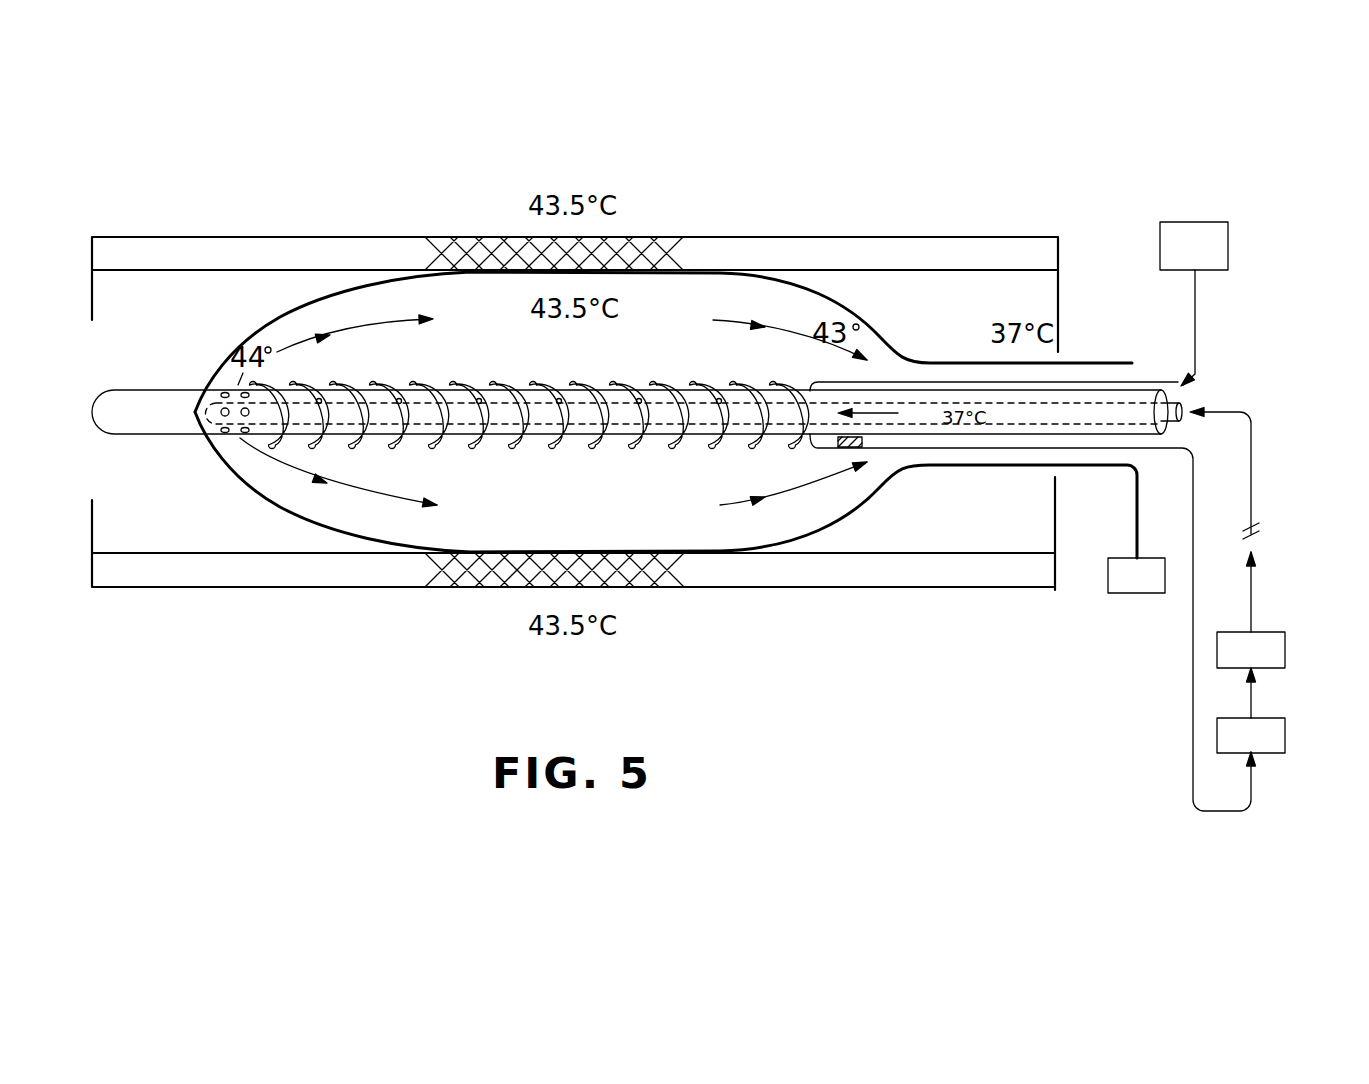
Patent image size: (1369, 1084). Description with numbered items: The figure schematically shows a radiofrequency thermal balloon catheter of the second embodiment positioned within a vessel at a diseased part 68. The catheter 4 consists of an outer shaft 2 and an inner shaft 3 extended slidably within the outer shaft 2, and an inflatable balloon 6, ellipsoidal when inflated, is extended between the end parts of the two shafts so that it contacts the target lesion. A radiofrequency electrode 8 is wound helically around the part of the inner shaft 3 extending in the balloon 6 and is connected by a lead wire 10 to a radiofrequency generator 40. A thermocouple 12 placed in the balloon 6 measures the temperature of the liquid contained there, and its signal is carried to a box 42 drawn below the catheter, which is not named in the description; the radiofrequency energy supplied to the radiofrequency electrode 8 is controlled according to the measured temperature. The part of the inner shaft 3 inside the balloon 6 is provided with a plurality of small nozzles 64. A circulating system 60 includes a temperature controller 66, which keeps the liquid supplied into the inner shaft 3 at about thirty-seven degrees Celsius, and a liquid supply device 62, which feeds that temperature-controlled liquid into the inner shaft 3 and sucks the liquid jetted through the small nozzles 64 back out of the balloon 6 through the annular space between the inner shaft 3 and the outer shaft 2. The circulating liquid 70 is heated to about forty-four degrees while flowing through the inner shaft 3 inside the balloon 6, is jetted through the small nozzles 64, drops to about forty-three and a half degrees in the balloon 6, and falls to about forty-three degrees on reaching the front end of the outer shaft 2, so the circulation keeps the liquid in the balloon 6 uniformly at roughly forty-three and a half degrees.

The outer shaft 2 is at (1010, 450).
The inner shaft 3 is at (993, 437).
The catheter 4 is at (671, 596).
The balloon 6 is at (265, 318).
The radiofrequency electrode 8 is at (560, 446).
The lead wire 10 is at (942, 382).
The thermocouple 12 is at (850, 448).
The radiofrequency generator 40 is at (1192, 222).
The thermocouple readout 42 is at (1143, 593).
The circulating system 60 is at (355, 372).
The liquid supply device 62 is at (1285, 650).
The small nozzles 64 is at (222, 391).
The temperature controller 66 is at (1285, 738).
The diseased part 68 is at (647, 245).
The circulating liquid 70 is at (385, 318).